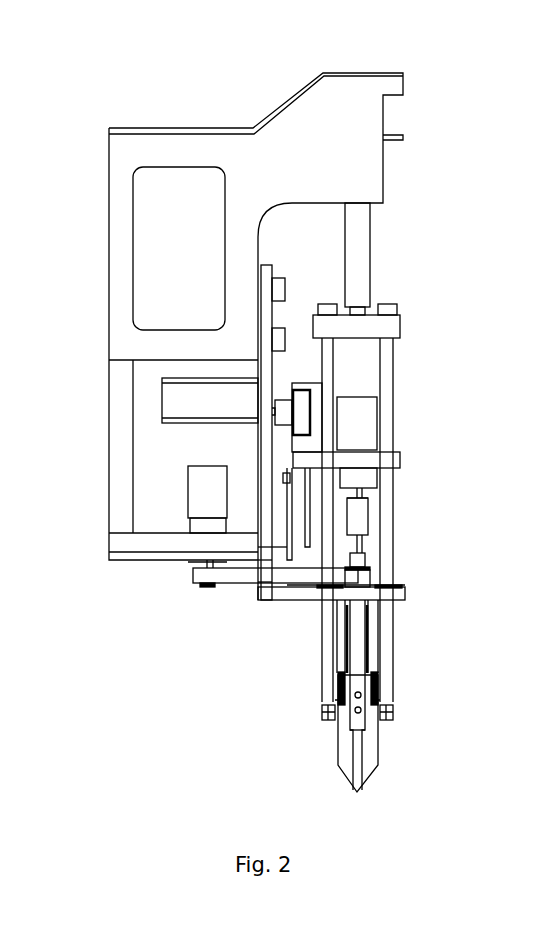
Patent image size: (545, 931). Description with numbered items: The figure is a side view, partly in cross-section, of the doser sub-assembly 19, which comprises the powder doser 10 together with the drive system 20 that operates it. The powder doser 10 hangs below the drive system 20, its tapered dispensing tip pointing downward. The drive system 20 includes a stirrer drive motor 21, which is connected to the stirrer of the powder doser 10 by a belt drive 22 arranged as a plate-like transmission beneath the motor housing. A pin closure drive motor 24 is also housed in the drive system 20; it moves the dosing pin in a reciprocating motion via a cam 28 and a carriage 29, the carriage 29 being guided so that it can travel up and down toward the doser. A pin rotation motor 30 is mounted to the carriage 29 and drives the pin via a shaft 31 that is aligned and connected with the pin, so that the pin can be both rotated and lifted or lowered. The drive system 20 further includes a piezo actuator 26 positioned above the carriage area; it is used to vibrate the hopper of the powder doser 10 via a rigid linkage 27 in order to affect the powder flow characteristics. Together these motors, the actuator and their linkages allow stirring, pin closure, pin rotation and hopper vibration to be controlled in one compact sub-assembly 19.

The powder doser 10 is at (428, 758).
The doser sub-assembly 19 is at (458, 112).
The drive system 20 is at (112, 72).
The stirrer drive motor 21 is at (207, 485).
The belt drive 22 is at (241, 576).
The pin closure drive motor 24 is at (173, 398).
The piezo actuator 26 is at (366, 226).
The rigid linkage 27 is at (389, 329).
The cam 28 is at (298, 418).
The carriage 29 is at (378, 465).
The pin rotation motor 30 is at (348, 407).
The shaft 31 is at (350, 512).